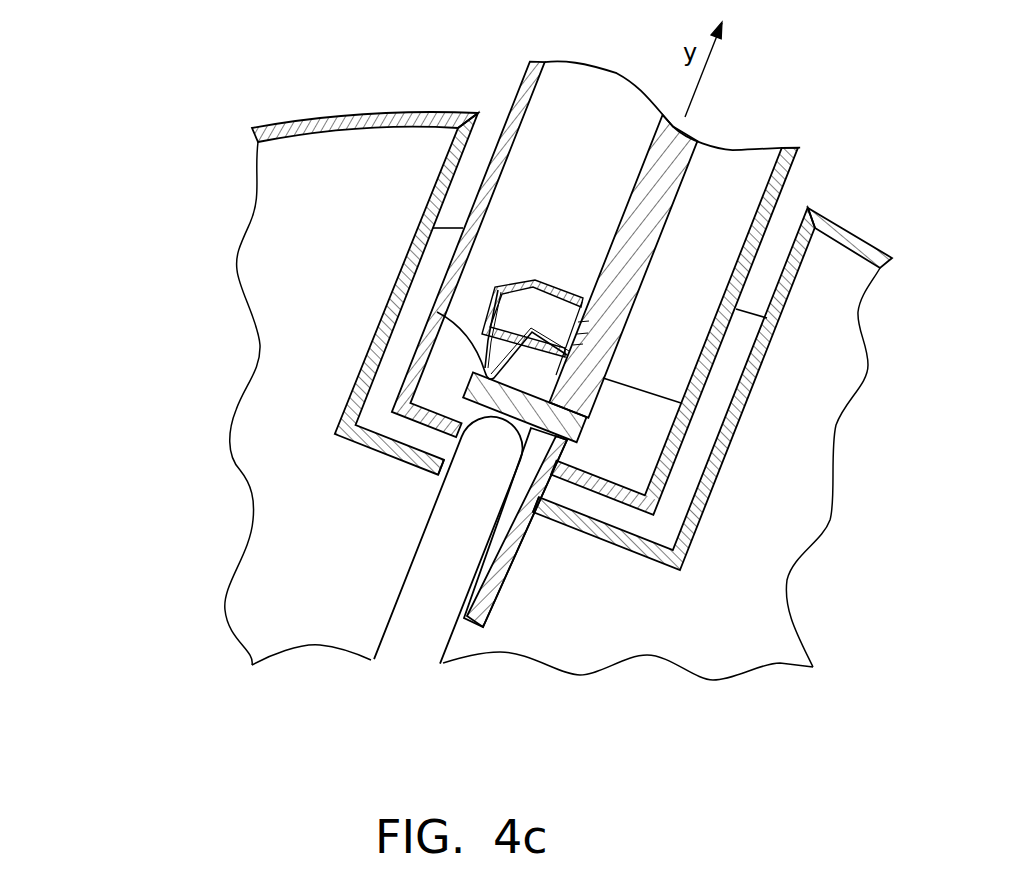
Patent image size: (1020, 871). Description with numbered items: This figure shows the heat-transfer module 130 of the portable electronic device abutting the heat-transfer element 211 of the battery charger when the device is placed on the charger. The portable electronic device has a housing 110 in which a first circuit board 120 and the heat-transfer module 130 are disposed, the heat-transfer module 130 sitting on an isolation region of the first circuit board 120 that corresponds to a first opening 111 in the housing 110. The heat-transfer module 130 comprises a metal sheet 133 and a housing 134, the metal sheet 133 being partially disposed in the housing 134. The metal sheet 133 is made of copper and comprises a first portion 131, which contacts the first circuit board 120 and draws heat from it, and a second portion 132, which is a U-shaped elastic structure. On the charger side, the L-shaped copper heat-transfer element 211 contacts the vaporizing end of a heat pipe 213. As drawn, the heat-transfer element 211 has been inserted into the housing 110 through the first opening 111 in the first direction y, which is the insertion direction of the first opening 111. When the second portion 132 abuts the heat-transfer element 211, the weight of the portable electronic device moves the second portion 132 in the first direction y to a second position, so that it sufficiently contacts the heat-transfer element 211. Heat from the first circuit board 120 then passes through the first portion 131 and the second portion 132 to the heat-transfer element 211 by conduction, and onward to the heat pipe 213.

The housing 110 is at (796, 188).
The first opening 111 is at (438, 477).
The first circuit board 120 is at (653, 148).
The heat-transfer module 130 is at (83, 170).
The first portion 131 is at (481, 321).
The second portion 132 is at (478, 333).
The metal sheet 133 is at (139, 228).
The housing 134 is at (496, 288).
The heat-transfer element 211 is at (507, 553).
The heat pipe 213 is at (428, 542).